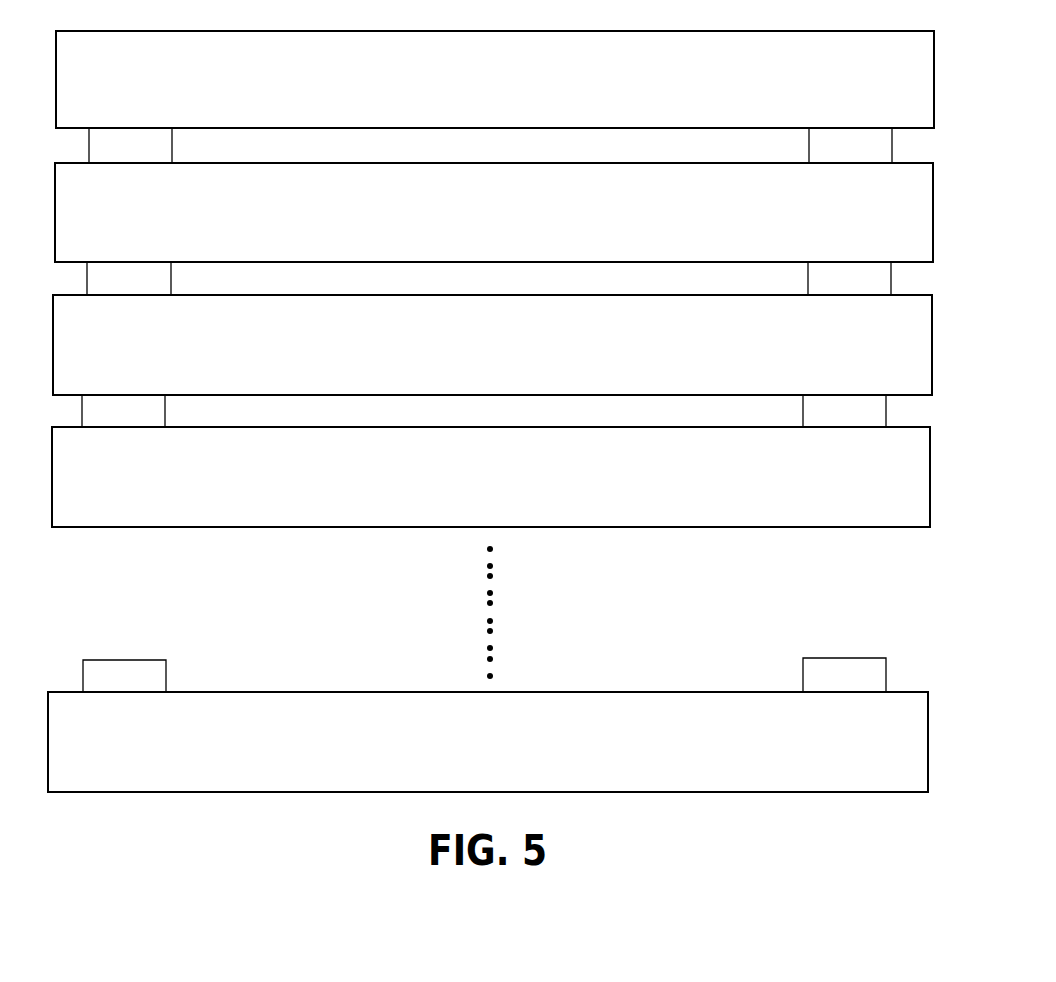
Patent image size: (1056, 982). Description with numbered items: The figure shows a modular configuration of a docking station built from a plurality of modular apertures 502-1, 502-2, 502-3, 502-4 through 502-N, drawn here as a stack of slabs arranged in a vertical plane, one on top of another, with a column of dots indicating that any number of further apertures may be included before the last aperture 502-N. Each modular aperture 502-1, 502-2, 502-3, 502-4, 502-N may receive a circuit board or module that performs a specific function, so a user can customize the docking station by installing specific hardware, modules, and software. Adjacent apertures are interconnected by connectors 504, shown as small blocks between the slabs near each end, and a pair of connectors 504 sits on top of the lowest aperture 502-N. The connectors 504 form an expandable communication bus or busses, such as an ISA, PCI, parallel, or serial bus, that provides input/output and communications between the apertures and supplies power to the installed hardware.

The modular aperture 502-1 is at (945, 83).
The modular aperture 502-2 is at (945, 215).
The modular aperture 502-3 is at (943, 332).
The modular aperture 502-4 is at (941, 472).
The modular aperture 502-N is at (939, 728).
The connector 504 is at (137, 128).